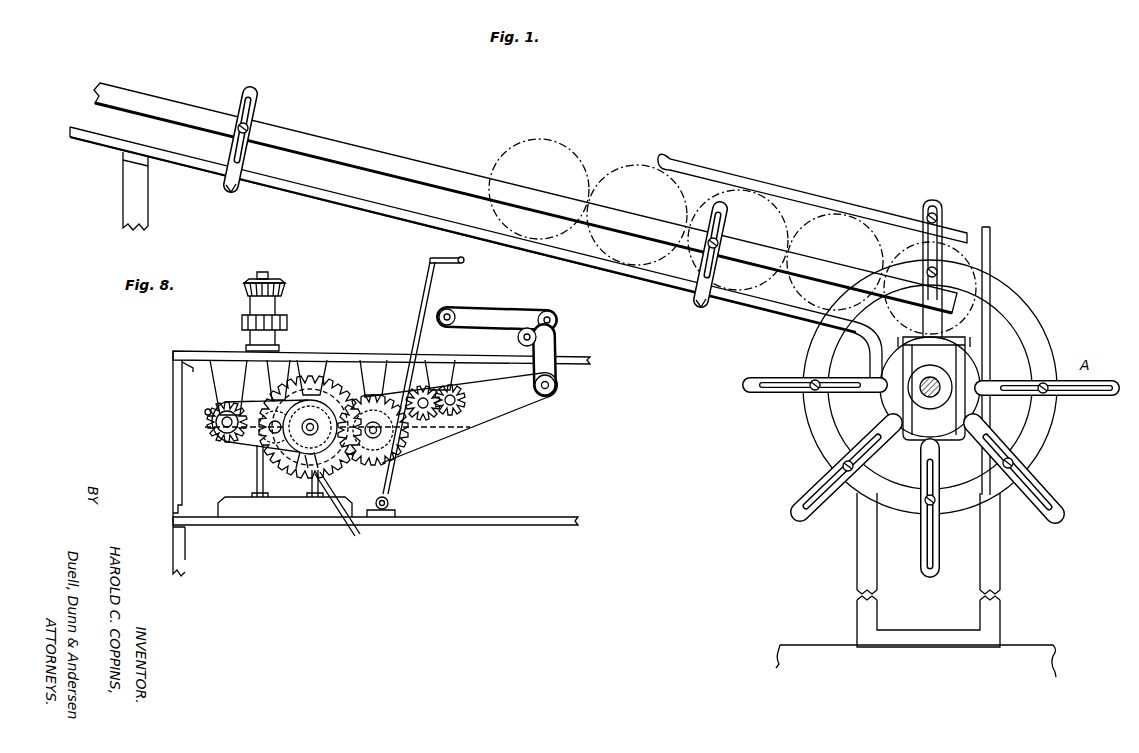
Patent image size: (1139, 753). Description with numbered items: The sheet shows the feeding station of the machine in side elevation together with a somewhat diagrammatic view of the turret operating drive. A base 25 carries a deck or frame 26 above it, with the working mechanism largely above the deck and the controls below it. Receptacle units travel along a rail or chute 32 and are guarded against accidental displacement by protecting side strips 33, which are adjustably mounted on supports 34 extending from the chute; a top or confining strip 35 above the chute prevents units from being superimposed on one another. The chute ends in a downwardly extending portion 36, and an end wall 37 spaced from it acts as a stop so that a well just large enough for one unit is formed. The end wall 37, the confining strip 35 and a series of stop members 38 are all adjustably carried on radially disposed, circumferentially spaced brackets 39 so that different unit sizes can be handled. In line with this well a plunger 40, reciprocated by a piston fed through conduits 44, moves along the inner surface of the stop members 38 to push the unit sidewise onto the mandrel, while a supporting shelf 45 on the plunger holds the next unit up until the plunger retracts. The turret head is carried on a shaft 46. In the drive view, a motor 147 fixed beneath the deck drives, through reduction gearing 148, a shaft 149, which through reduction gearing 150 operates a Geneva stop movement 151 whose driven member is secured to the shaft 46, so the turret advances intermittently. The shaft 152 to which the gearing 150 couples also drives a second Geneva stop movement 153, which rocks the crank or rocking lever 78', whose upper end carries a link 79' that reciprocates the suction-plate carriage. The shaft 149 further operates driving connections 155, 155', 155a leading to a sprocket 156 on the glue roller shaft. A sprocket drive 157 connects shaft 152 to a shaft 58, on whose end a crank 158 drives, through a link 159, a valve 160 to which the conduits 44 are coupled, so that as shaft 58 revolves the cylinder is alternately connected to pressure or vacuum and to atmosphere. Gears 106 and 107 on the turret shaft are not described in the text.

In FIG. 1, the base 25 is at (1022, 650).
In FIG. 8, the deck or frame 26 is at (335, 357).
In FIG. 1, the rail or chute 32 is at (354, 200).
In FIG. 1, the protecting side strips 33 is at (360, 150).
In FIG. 1, the supports 34 is at (260, 109).
In FIG. 1, the top or confining strip 35 is at (720, 177).
In FIG. 1, the downwardly extending portion 36 is at (869, 366).
In FIG. 1, the end wall 37 is at (991, 259).
In FIG. 1, the stop members 38 is at (972, 421).
In FIG. 1, the brackets 39 is at (817, 482).
In FIG. 1, the plunger 40 is at (976, 370).
In FIG. 8, the conduits 44 is at (357, 530).
In FIG. 1, the supporting shelf 45 is at (962, 341).
In FIG. 8, the shaft 46 is at (265, 268).
In FIG. 8, the shaft 58 is at (222, 432).
In FIG. 8, the gear 106 is at (288, 324).
In FIG. 8, the bevel gear 107 is at (286, 289).
In FIG. 8, the motor 147 is at (470, 418).
In FIG. 8, the reduction gearing 148 is at (425, 418).
In FIG. 8, the shaft 149 is at (388, 444).
In FIG. 8, the reduction gearing 150 is at (286, 468).
In FIG. 8, the Geneva stop movement 151 is at (298, 500).
In FIG. 8, the shaft 152 is at (310, 424).
In FIG. 8, the second Geneva stop movement 153 is at (283, 390).
In FIG. 8, the driving connection 155 is at (460, 418).
In FIG. 8, the driving connection 155a is at (558, 342).
In FIG. 8, the driving connection 155' is at (572, 384).
In FIG. 8, the sprocket 156 is at (455, 311).
In FIG. 8, the sprocket drive 157 is at (205, 414).
In FIG. 8, the crank 158 is at (230, 404).
In FIG. 8, the link 159 is at (256, 443).
In FIG. 8, the valve 160 is at (312, 458).
In FIG. 8, the rocking lever 78' is at (409, 378).
In FIG. 8, the link 79' is at (455, 268).